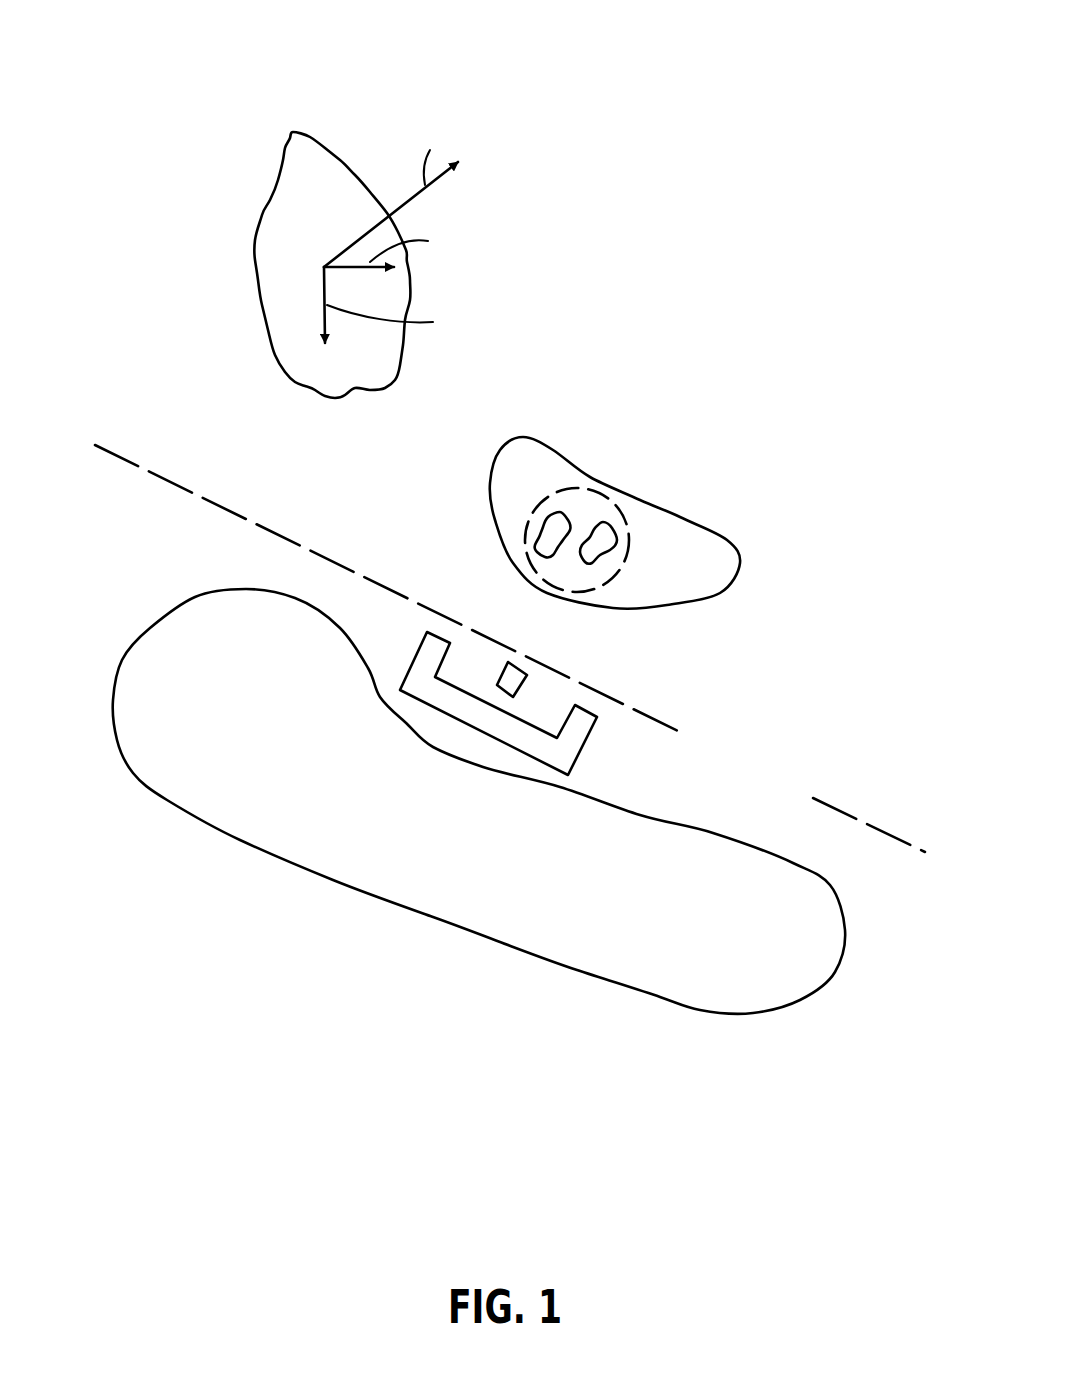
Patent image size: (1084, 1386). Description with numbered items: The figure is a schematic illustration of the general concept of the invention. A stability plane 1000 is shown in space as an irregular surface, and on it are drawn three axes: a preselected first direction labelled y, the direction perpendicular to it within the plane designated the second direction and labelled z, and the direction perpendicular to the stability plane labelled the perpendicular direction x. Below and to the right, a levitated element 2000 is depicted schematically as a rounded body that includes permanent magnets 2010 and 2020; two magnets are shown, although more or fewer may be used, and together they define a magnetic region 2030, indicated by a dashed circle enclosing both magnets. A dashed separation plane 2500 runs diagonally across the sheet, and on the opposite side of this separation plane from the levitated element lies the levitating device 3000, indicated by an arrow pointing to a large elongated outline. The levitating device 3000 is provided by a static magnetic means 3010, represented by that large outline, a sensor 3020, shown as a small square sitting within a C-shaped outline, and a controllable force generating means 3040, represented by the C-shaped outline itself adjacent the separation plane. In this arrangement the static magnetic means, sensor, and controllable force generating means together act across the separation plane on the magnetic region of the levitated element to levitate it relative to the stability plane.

The stability plane 1000 is at (309, 135).
The levitated element 2000 is at (738, 581).
The permanent magnet 2010 is at (568, 512).
The permanent magnet 2020 is at (613, 527).
The magnetic region 2030 is at (568, 487).
The separation plane 2500 is at (177, 483).
The levitating device 3000 is at (170, 592).
The static magnetic means 3010 is at (790, 1012).
The sensor 3020 is at (523, 672).
The controllable force generating means 3040 is at (583, 748).